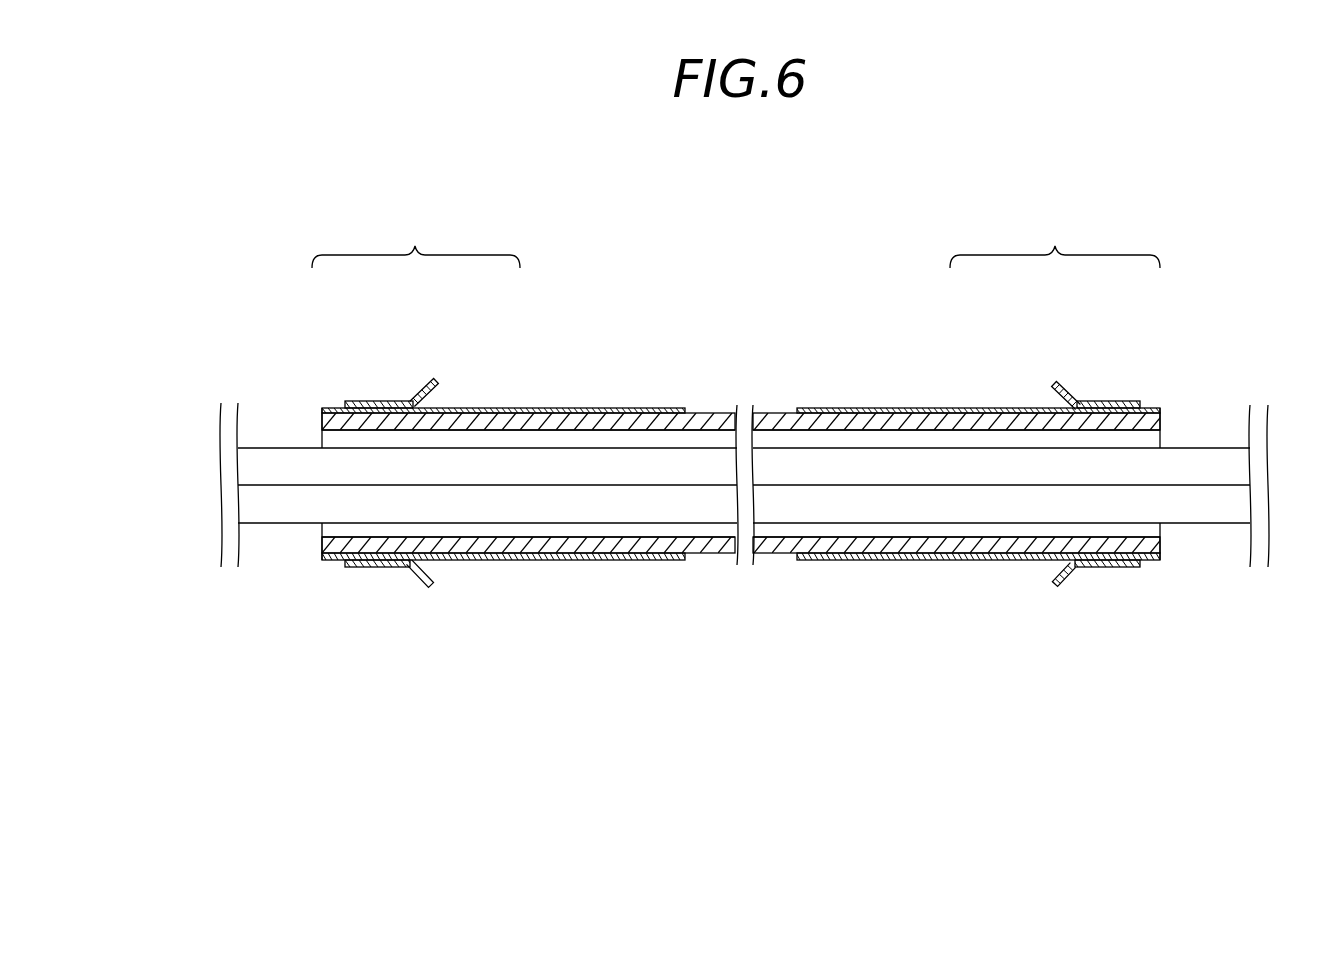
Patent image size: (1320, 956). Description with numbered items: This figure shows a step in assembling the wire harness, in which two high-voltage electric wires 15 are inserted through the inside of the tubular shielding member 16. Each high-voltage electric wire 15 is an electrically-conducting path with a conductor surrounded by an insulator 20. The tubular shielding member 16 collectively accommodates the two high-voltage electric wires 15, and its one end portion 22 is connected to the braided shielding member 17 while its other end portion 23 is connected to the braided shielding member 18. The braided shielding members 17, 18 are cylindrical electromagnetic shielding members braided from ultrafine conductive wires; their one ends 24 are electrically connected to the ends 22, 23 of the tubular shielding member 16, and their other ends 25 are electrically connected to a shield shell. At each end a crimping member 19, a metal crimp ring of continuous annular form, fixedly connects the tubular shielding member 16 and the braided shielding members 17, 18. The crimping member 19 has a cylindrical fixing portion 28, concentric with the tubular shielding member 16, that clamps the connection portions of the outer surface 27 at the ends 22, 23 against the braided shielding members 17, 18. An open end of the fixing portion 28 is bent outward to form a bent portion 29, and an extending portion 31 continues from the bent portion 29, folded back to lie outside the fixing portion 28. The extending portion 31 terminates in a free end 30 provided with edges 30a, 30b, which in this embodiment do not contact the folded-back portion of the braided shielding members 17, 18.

The high-voltage electric wire 15 is at (246, 502).
The tubular shielding member 16 is at (966, 185).
The braided shielding member 17 is at (577, 409).
The braided shielding member 18 is at (917, 409).
The crimping member 19 is at (736, 243).
The insulator 20 is at (587, 465).
The one end portion 22 is at (327, 436).
The other end portion 23 is at (1162, 428).
The one end 24 is at (323, 409).
The other end 25 is at (647, 408).
The outer surface 27 is at (713, 411).
The fixing portion 28 is at (377, 402).
The bent portion 29 is at (417, 405).
The free end 30 is at (436, 382).
The edge 30a is at (420, 386).
The edge 30b is at (433, 397).
The extending portion 31 is at (410, 402).